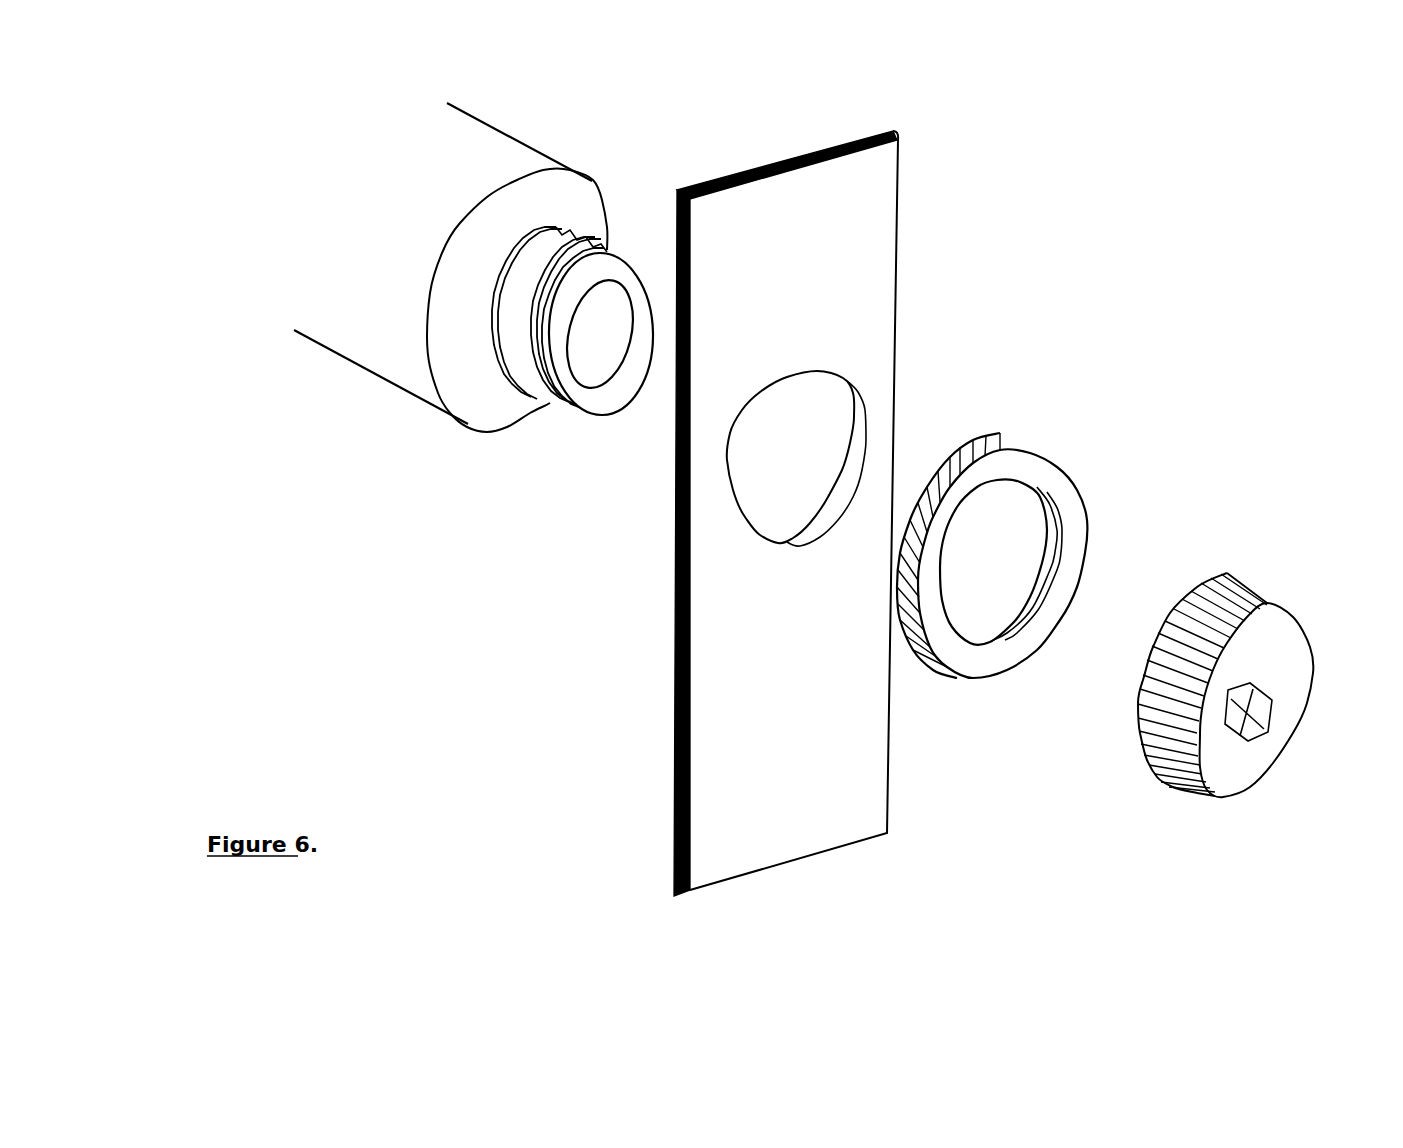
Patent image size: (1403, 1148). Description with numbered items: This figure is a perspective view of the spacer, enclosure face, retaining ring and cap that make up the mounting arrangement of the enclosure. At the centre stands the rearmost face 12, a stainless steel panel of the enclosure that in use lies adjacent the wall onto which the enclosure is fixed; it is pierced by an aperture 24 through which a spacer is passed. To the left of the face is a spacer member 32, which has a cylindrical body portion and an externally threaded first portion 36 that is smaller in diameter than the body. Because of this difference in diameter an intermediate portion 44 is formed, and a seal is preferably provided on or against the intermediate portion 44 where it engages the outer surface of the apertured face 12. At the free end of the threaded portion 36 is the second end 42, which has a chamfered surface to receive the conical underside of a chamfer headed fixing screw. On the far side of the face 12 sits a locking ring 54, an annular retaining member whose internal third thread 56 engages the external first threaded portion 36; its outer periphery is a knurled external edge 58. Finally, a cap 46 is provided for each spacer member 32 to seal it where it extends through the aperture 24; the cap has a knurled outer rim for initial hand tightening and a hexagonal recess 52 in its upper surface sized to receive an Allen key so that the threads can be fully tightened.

The rearmost face 12 is at (721, 513).
The aperture 24 is at (874, 433).
The spacer member 32 is at (443, 301).
The externally threaded first portion 36 is at (538, 415).
The second end 42 is at (601, 398).
The intermediate portion 44 is at (553, 265).
The cap 46 is at (1185, 708).
The hexagonal recess 52 is at (1290, 763).
The locking ring 54 is at (1050, 544).
The internal third thread 56 is at (1079, 563).
The knurled external edge 58 is at (1006, 516).